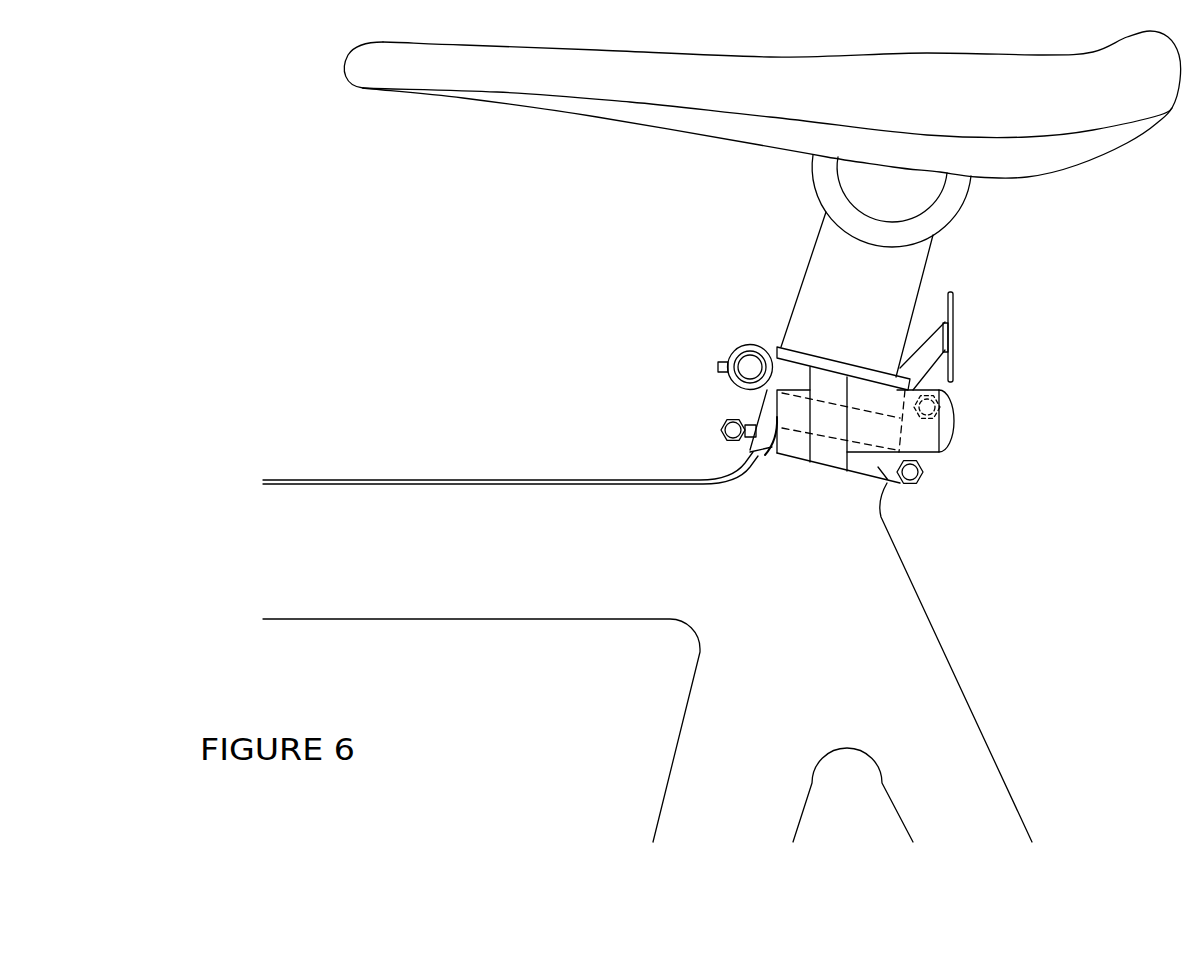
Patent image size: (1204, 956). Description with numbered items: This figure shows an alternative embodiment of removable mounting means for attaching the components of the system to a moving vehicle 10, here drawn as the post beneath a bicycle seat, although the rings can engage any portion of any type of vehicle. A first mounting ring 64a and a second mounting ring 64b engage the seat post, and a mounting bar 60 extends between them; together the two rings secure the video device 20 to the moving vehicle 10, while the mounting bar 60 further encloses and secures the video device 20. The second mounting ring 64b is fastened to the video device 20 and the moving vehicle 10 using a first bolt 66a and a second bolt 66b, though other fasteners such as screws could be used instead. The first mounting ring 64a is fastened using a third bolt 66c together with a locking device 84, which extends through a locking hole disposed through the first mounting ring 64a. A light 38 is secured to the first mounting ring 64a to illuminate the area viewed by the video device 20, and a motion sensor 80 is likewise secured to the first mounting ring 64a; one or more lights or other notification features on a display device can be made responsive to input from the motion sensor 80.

The moving vehicle 10 is at (635, 515).
The video device 20 is at (953, 419).
The light 38 is at (953, 355).
The mounting bar 60 is at (823, 417).
The first mounting ring 64a is at (783, 362).
The second mounting ring 64b is at (897, 485).
The first bolt 66a is at (730, 428).
The second bolt 66b is at (915, 472).
The third bolt 66c is at (947, 397).
The motion sensor 80 is at (953, 308).
The locking device 84 is at (748, 362).